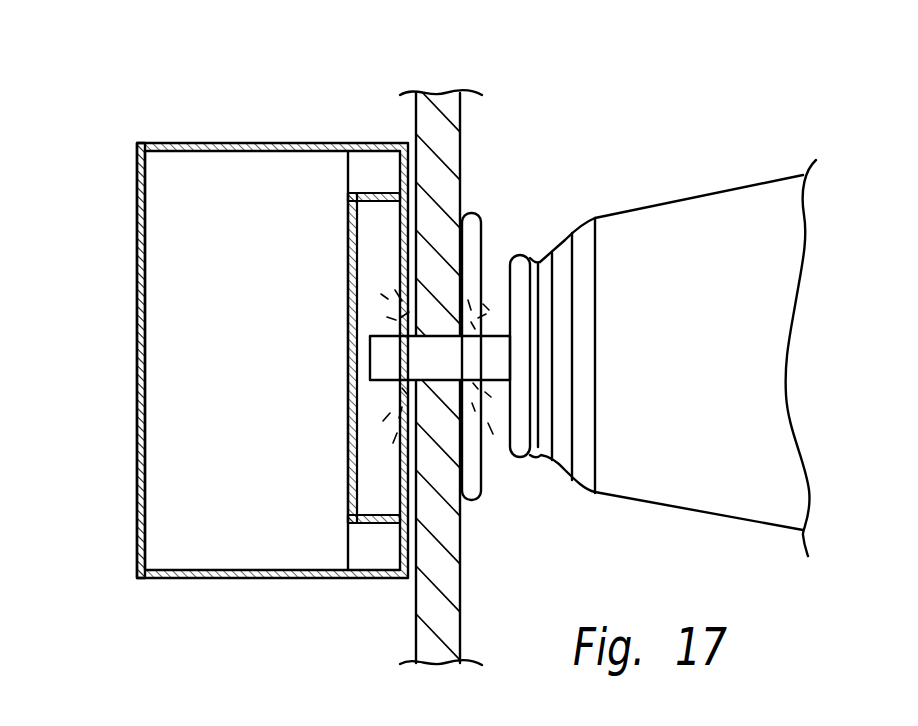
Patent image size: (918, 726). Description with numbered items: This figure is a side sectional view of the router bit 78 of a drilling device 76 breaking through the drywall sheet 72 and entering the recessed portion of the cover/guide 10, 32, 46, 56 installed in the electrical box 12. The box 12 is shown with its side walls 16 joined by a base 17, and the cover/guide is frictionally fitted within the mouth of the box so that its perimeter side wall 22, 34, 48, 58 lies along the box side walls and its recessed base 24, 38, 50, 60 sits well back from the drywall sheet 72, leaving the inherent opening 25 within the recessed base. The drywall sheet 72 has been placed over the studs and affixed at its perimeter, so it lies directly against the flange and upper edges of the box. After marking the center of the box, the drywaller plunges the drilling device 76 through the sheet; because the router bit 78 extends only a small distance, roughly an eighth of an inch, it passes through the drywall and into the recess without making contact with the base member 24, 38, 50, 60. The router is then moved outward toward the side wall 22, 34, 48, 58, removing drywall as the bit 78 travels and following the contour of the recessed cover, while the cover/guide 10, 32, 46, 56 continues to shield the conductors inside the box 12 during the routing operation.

The cover/guide 10 is at (295, 323).
The cover/guide 32 is at (295, 323).
The cover/guide 46 is at (295, 323).
The cover/guide 56 is at (401, 134).
The electrical/communications box 12 is at (316, 124).
The side walls 16 is at (219, 144).
The base 17 is at (137, 396).
The perimeter side wall 22 is at (280, 358).
The side walls 34 is at (280, 358).
The recessed side walls 48 is at (280, 358).
The side walls 58 is at (381, 203).
The base 24 is at (261, 358).
The recessed base 38 is at (261, 358).
The base member 50 is at (261, 358).
The recessed base member 60 is at (348, 386).
The opening 25 is at (378, 245).
The drywall sheet 72 is at (455, 162).
The drilling device 76 is at (707, 156).
The router bit 78 is at (383, 346).